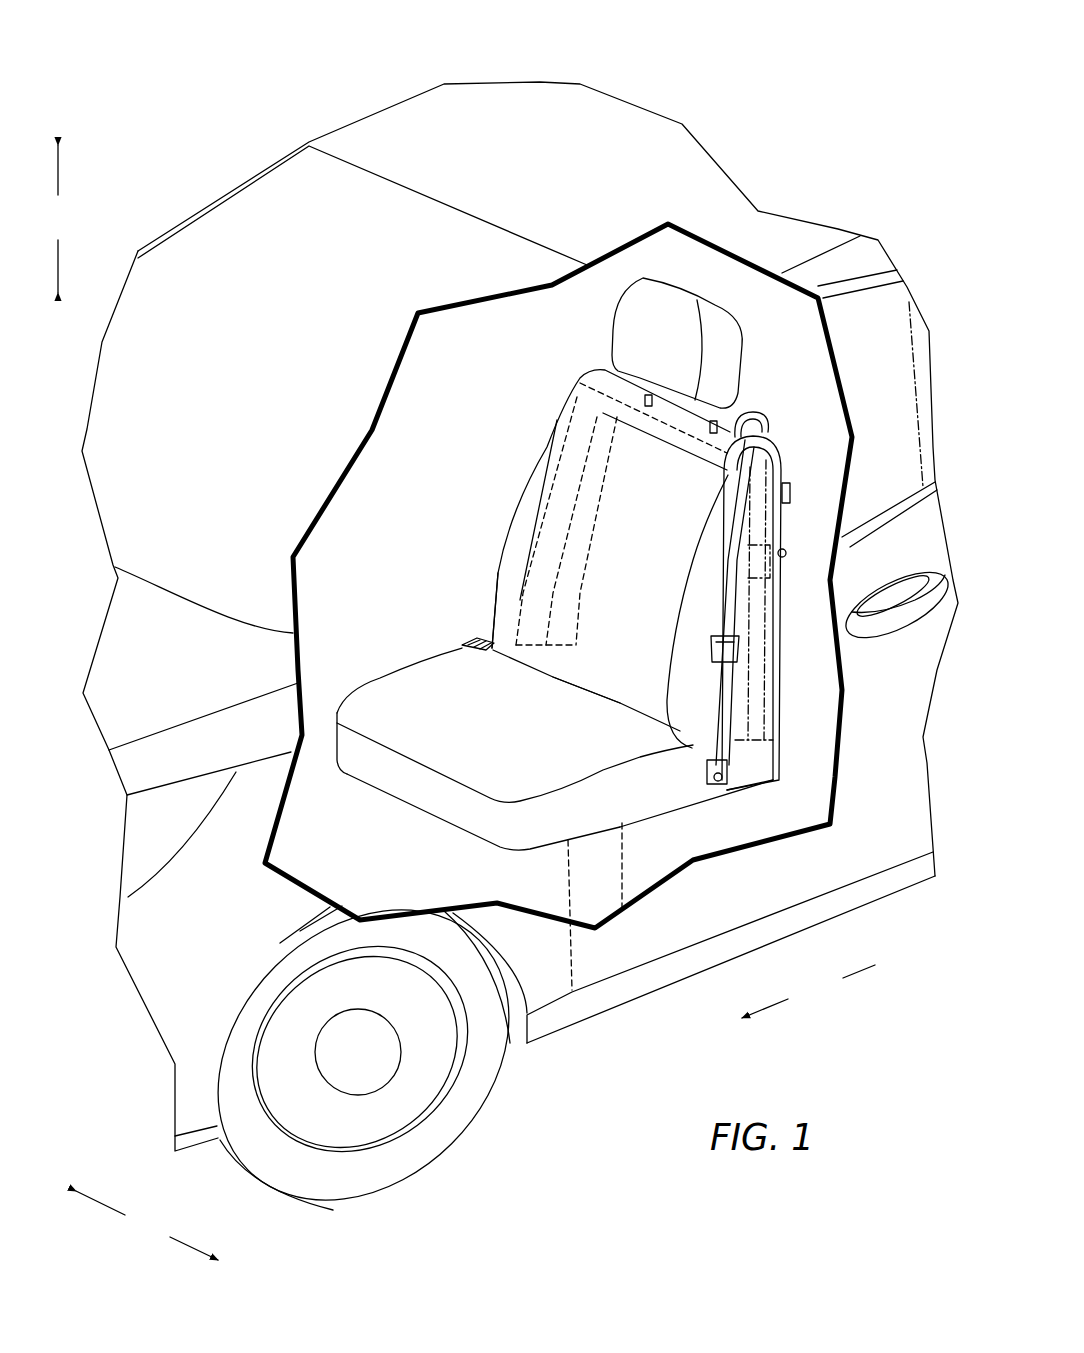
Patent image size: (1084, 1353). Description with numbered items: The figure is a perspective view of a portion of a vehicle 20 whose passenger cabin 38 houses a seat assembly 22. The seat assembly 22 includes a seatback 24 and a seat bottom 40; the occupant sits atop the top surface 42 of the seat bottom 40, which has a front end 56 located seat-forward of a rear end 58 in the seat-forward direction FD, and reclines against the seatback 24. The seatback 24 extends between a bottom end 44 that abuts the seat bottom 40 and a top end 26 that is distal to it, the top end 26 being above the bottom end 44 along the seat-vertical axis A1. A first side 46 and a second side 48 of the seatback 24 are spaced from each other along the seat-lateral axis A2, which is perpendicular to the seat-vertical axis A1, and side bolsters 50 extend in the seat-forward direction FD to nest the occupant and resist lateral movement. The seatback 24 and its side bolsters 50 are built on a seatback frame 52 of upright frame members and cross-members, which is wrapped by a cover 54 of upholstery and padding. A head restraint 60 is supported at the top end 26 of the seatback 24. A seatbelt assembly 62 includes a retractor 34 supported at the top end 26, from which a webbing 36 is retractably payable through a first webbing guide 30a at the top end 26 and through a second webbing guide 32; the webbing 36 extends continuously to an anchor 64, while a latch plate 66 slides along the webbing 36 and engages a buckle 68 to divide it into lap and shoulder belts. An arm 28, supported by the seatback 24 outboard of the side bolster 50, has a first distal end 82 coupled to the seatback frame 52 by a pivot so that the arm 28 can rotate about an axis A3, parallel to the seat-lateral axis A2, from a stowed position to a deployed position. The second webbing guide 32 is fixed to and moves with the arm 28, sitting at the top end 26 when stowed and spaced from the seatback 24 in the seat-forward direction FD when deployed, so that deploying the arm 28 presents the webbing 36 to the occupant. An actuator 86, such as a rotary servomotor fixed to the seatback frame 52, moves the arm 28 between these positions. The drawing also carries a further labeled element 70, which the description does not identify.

The vehicle 20 is at (407, 120).
The seat assembly 22 is at (523, 380).
The seatback 24 is at (765, 697).
The top end 26 is at (600, 371).
The arm 28 is at (780, 522).
The first webbing guide 30a is at (757, 413).
The second webbing guide 32 is at (738, 417).
The retractor 34 is at (790, 444).
The webbing 36 is at (722, 517).
The passenger cabin 38 is at (384, 497).
The seat bottom 40 is at (653, 790).
The top surface 42 is at (464, 744).
The bottom end 44 is at (600, 660).
The first side 46 is at (530, 488).
The second side 48 is at (765, 623).
The side bolsters 50 is at (685, 657).
The seatback frame 52 is at (533, 537).
The cover 54 is at (767, 590).
The front end 56 is at (400, 775).
The rear end 58 is at (751, 759).
The head restraint 60 is at (666, 297).
The seatbelt assembly 62 is at (699, 497).
The anchor 64 is at (725, 766).
The latch plate 66 is at (733, 635).
The buckle 68 is at (471, 637).
The airbag 70 is at (807, 483).
The first distal end 82 is at (766, 557).
The actuator 86 is at (774, 553).
The seat-vertical axis A1 is at (57, 219).
The seat-lateral axis A2 is at (147, 1225).
The axis A3 is at (852, 585).
The seat-forward direction FD is at (808, 991).